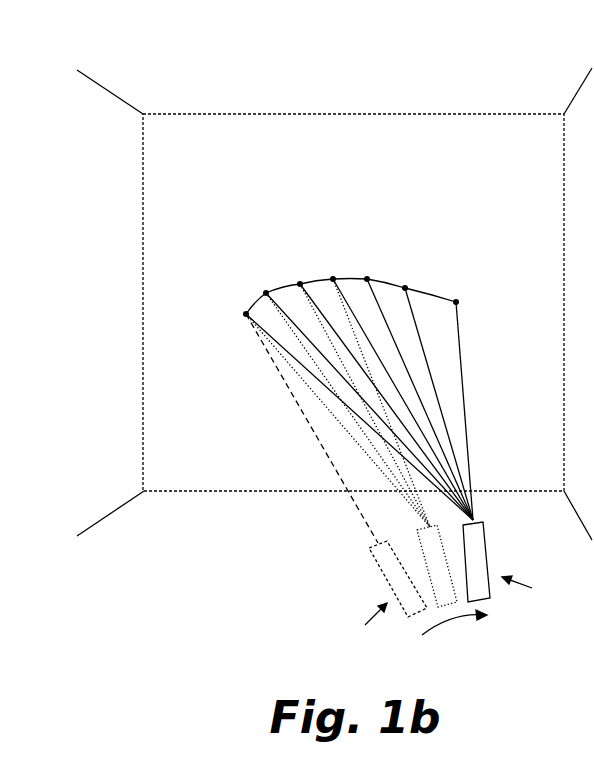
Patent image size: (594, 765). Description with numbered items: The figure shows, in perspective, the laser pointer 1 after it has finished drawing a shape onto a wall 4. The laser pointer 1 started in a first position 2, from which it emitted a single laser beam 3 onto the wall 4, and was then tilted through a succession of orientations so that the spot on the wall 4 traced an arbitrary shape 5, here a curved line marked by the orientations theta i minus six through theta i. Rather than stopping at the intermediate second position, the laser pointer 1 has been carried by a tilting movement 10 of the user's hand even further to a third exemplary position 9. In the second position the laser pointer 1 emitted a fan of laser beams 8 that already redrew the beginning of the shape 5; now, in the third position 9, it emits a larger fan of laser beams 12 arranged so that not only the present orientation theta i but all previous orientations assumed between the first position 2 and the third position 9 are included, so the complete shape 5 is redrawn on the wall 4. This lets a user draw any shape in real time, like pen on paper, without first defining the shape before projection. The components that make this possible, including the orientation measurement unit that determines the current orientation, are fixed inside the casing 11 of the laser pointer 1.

The laser pointer 1 is at (423, 565).
The first position 2 is at (365, 625).
The laser beam 3 is at (277, 365).
The wall 4 is at (177, 149).
The shape 5 is at (253, 300).
The laser beam / fan of laser beams 8 is at (403, 477).
The third position 9 is at (529, 590).
The tilting movement 10 is at (447, 622).
The casing 11 is at (473, 550).
The fan of laser beams 12 is at (417, 392).